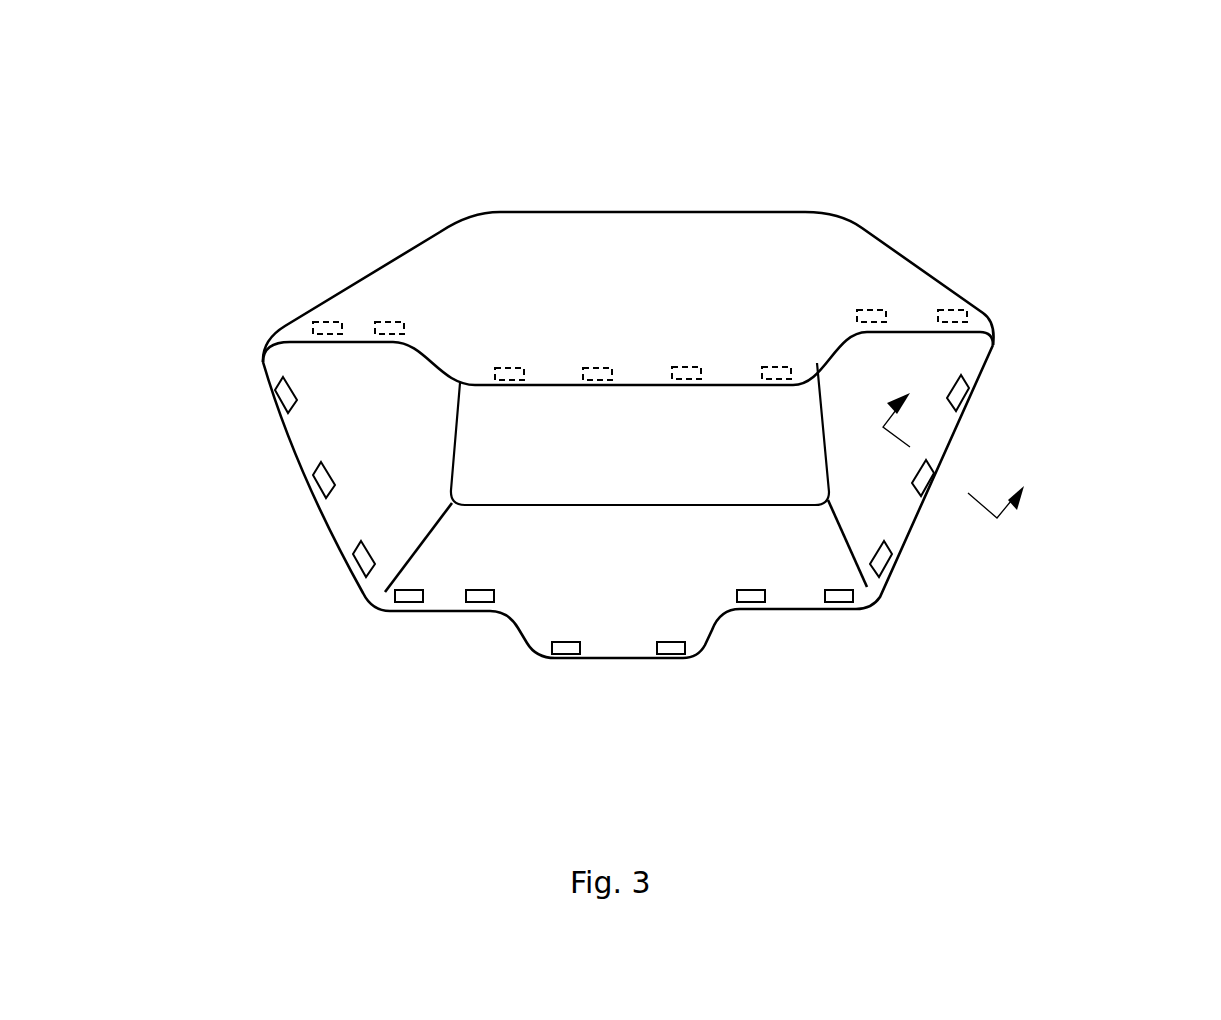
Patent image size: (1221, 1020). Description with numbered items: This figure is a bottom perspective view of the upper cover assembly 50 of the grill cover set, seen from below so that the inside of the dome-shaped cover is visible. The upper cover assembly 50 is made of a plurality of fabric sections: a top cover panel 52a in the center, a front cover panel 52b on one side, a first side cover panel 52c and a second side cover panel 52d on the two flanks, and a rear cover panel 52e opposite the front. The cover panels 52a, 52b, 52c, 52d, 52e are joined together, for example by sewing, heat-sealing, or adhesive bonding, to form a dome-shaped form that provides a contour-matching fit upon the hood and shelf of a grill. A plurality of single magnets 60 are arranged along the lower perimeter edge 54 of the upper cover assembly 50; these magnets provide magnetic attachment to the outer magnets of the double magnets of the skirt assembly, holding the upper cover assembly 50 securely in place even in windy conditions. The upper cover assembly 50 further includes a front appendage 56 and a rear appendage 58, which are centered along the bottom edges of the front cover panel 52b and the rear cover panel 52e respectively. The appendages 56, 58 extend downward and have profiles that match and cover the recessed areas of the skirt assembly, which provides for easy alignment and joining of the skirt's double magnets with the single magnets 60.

The upper cover assembly 50 is at (1061, 172).
The top cover panel 52a is at (542, 455).
The front cover panel 52b is at (720, 257).
The first side cover panel 52c is at (370, 400).
The second side cover panel 52d is at (868, 483).
The rear cover panel 52e is at (768, 537).
The lower perimeter edge 54 is at (303, 477).
The front appendage 56 is at (645, 385).
The rear appendage 58 is at (665, 665).
The single magnets 60 is at (505, 368).